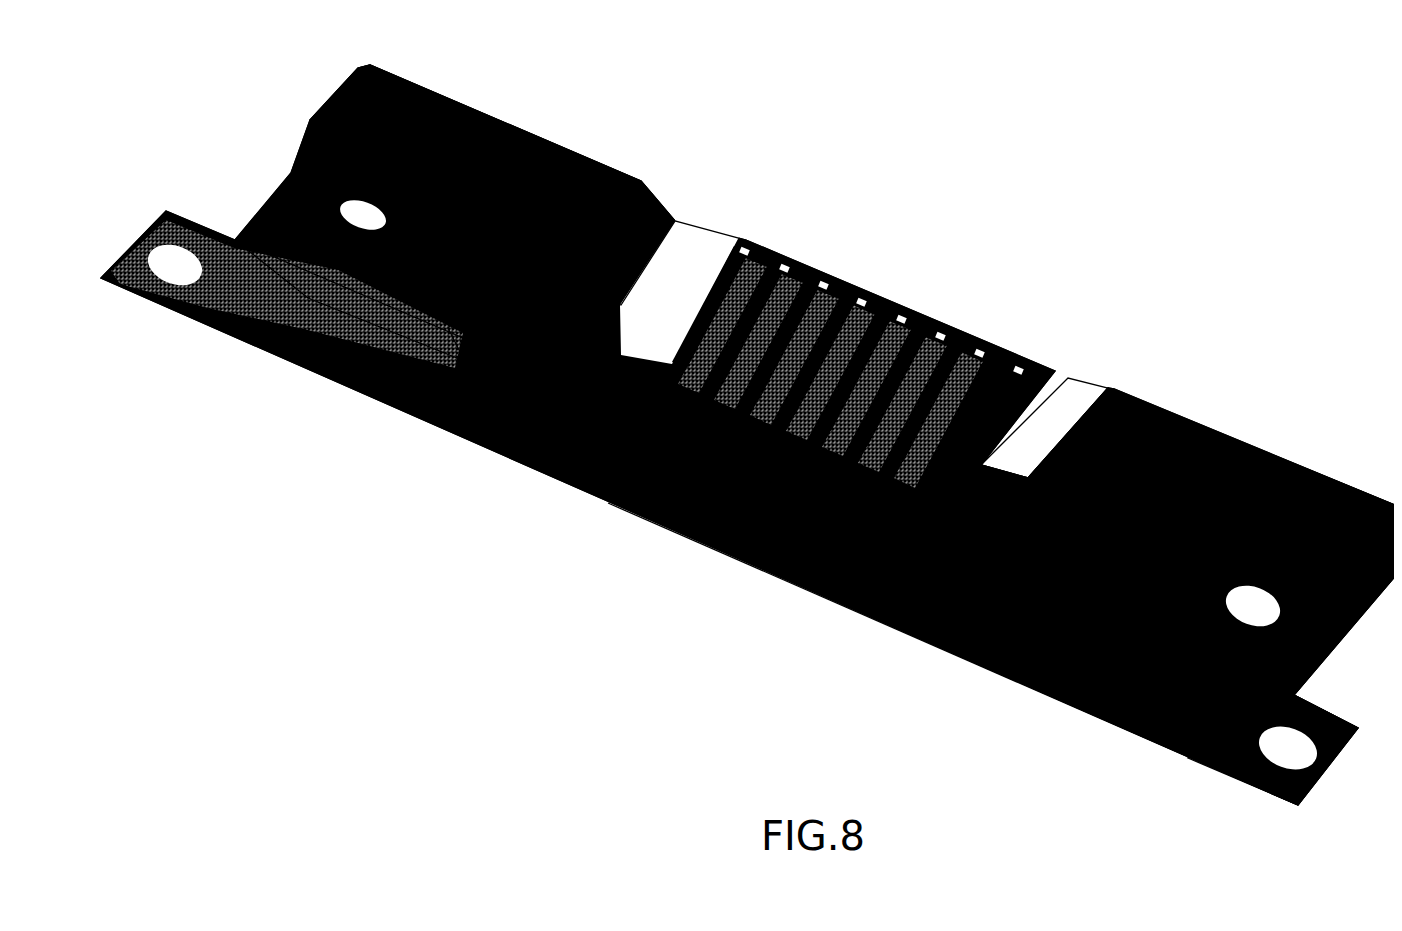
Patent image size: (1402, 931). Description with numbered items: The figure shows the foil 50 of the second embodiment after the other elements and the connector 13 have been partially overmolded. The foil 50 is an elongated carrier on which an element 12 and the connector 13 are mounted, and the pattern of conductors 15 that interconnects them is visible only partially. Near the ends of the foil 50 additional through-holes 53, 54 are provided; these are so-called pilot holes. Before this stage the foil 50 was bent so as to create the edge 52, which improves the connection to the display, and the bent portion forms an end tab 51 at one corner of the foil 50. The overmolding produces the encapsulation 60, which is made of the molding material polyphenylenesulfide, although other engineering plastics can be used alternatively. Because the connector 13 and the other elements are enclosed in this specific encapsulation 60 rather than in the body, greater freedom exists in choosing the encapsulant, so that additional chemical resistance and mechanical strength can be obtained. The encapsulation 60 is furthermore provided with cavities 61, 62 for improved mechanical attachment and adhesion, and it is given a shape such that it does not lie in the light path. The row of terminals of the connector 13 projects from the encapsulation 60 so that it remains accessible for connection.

The foil 50 is at (203, 491).
The element 12 is at (316, 300).
The connectors 13 is at (830, 330).
The pattern of conductors 15 is at (1293, 676).
The end tab of mounting plate 51 is at (1230, 770).
The edge 52 is at (1062, 690).
The through-hole 53 is at (350, 212).
The through-hole 54 is at (165, 262).
The encapsulation 60 is at (716, 537).
The cavity 61 is at (465, 372).
The cavity 62 is at (551, 130).